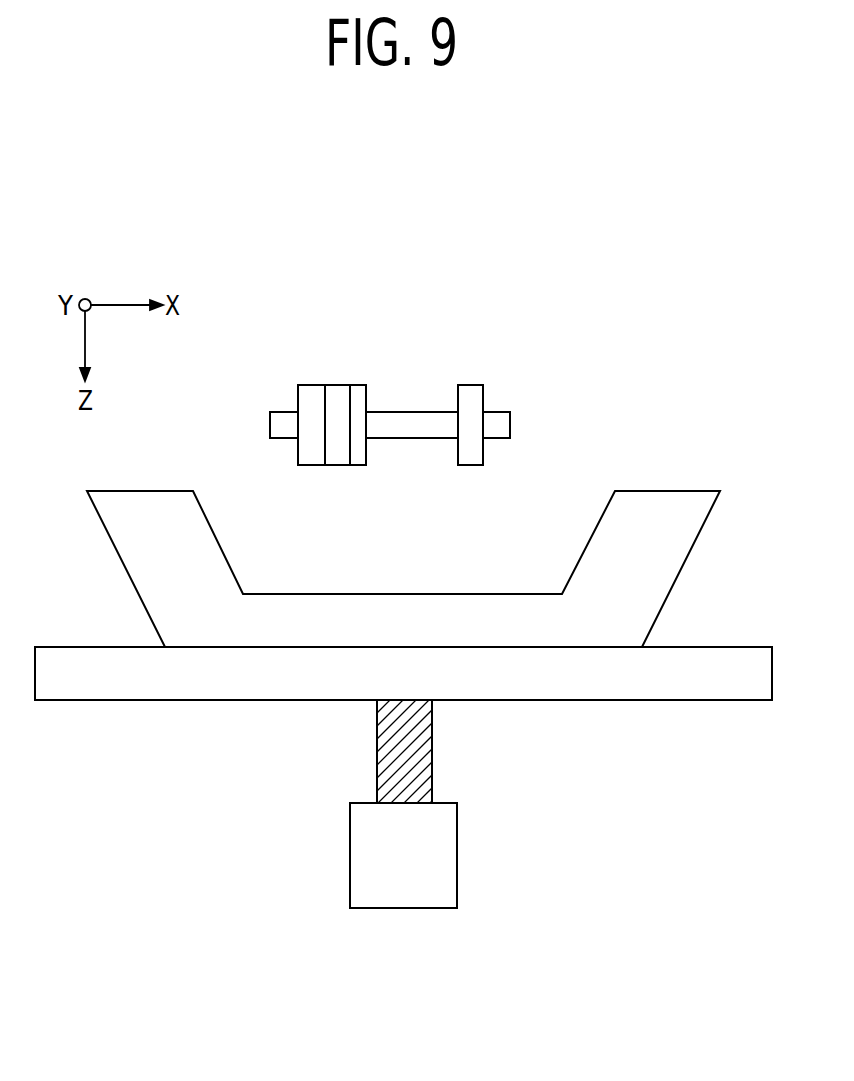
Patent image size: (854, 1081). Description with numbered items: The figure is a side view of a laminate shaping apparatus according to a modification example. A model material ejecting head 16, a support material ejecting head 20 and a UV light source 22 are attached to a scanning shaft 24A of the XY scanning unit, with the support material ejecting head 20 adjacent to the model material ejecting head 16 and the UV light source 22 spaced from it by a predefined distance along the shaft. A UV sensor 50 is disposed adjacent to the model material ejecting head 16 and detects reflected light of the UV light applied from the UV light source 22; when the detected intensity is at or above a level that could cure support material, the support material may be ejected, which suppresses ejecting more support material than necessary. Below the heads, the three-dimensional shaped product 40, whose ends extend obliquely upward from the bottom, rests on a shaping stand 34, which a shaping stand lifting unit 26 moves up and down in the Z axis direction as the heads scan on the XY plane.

The model material ejecting head 16 is at (338, 385).
The support material ejecting head 20 is at (313, 385).
The UV light source 22 is at (473, 385).
The scanning shaft 24A is at (510, 424).
The shaping stand lifting unit 26 is at (447, 856).
The shaping stand 34 is at (720, 690).
The three-dimensional shaped product 40 is at (655, 500).
The UV sensor 50 is at (360, 392).